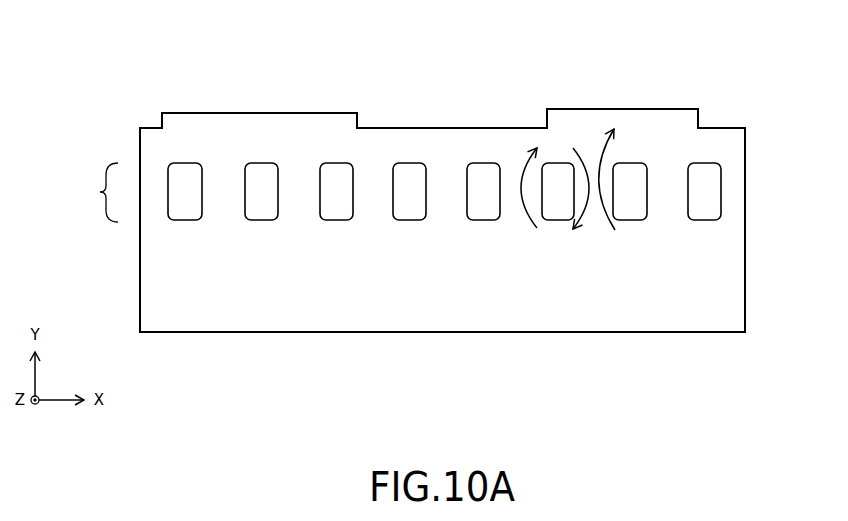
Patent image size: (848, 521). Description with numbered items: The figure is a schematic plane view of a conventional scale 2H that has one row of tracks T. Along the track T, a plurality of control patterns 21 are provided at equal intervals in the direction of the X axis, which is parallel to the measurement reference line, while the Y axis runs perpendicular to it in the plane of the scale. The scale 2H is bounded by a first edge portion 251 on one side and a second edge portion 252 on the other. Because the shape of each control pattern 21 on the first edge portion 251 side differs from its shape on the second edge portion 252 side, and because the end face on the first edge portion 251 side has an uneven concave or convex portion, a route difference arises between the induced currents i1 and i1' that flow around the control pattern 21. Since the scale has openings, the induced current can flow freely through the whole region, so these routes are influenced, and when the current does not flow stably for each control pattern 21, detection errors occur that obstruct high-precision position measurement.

The control pattern 21 is at (182, 180).
The first edge portion 251 is at (446, 127).
The second edge portion 252 is at (435, 333).
The scale 2H is at (679, 89).
The track T is at (93, 192).
The induced current i1 is at (550, 189).
The induced current i1' is at (643, 189).